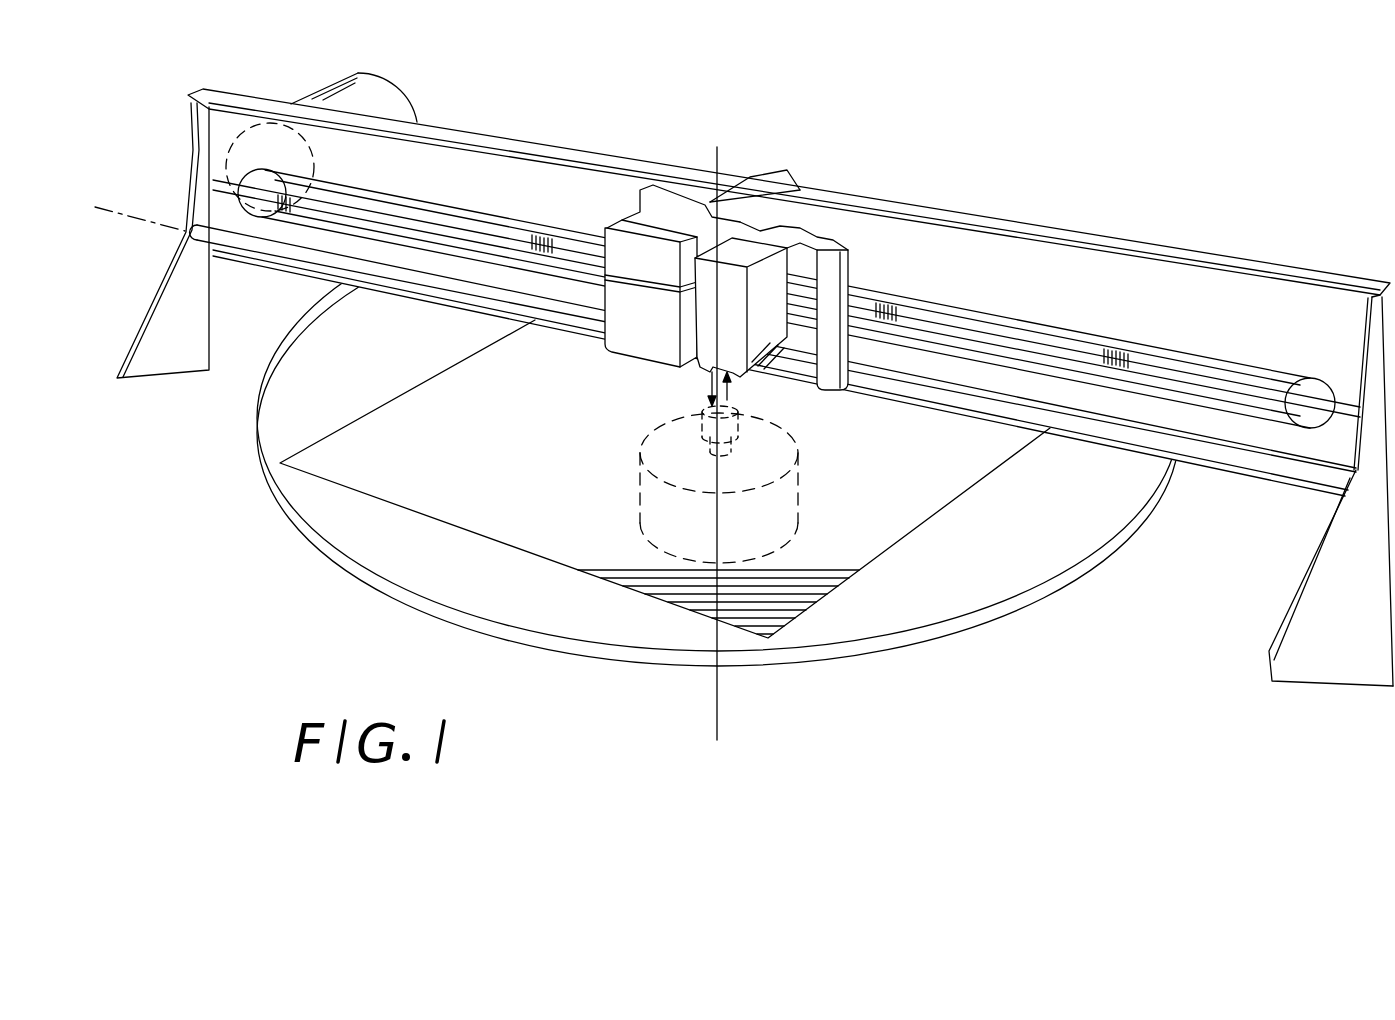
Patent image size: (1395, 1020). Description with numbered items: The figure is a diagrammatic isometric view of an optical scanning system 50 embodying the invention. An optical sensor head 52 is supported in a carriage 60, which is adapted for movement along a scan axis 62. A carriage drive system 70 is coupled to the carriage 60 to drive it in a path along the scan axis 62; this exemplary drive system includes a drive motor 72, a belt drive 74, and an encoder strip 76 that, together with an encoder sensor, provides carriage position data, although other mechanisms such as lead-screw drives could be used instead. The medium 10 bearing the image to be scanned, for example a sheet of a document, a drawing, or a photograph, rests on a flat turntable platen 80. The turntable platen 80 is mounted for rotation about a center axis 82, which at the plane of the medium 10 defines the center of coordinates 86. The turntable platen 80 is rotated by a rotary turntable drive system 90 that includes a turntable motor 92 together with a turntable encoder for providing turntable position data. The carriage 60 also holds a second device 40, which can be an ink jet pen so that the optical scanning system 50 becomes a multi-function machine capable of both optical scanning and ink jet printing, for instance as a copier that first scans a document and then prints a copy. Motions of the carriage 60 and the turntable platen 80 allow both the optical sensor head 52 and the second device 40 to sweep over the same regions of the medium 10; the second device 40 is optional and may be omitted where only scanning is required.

The medium 10 is at (405, 488).
The second device 40 is at (655, 222).
The optical scanning system 50 is at (962, 150).
The optical sensor head 52 is at (745, 252).
The carriage 60 is at (842, 272).
The scan axis 62 is at (127, 212).
The carriage drive system 70 is at (412, 190).
The drive motor 72 is at (400, 104).
The belt drive 74 is at (570, 215).
The encoder strip 76 is at (412, 282).
The turntable platen 80 is at (537, 610).
The center axis 82 is at (721, 703).
The center of coordinates 86 is at (708, 407).
The rotary turntable drive system 90 is at (637, 437).
The turntable motor 92 is at (785, 507).